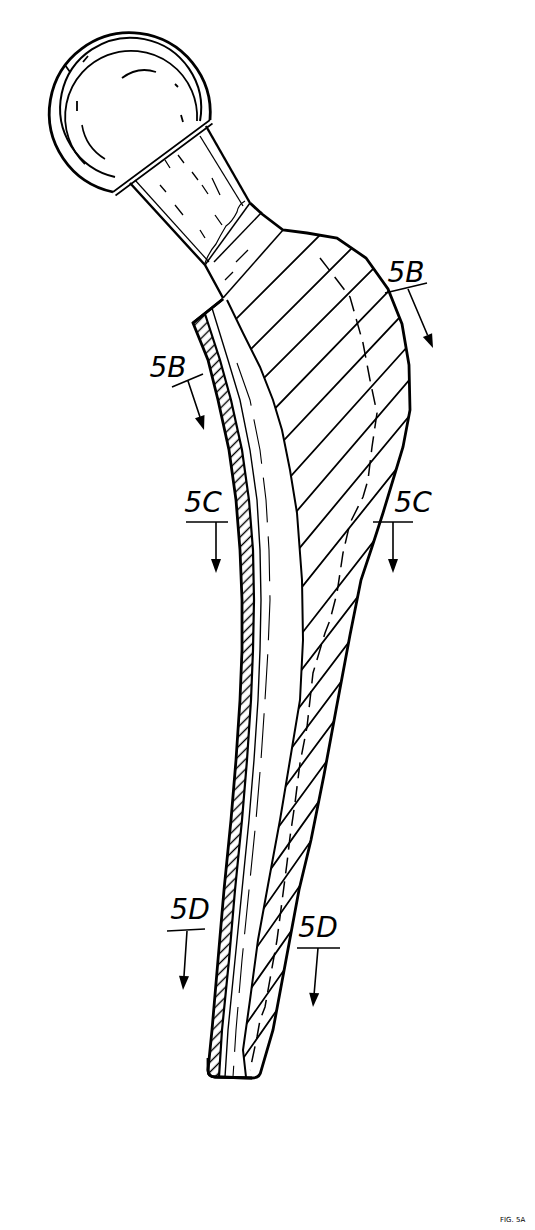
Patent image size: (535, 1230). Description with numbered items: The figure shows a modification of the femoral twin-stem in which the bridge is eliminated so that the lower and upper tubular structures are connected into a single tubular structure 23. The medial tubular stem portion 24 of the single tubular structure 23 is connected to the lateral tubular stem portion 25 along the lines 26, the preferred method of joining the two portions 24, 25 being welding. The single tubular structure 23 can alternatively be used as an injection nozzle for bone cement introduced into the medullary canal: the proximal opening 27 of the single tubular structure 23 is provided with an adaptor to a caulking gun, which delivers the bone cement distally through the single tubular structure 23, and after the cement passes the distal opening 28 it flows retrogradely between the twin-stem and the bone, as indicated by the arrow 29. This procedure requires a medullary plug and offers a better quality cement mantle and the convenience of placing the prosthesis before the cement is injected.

The single tubular structure 23 is at (273, 753).
The medial tubular stem portion 24 is at (243, 648).
The lateral tubular stem portion 25 is at (337, 497).
The lines 26 is at (377, 397).
The proximal opening 27 is at (203, 313).
The distal opening 28 is at (232, 1095).
The arrow 29 is at (222, 1084).